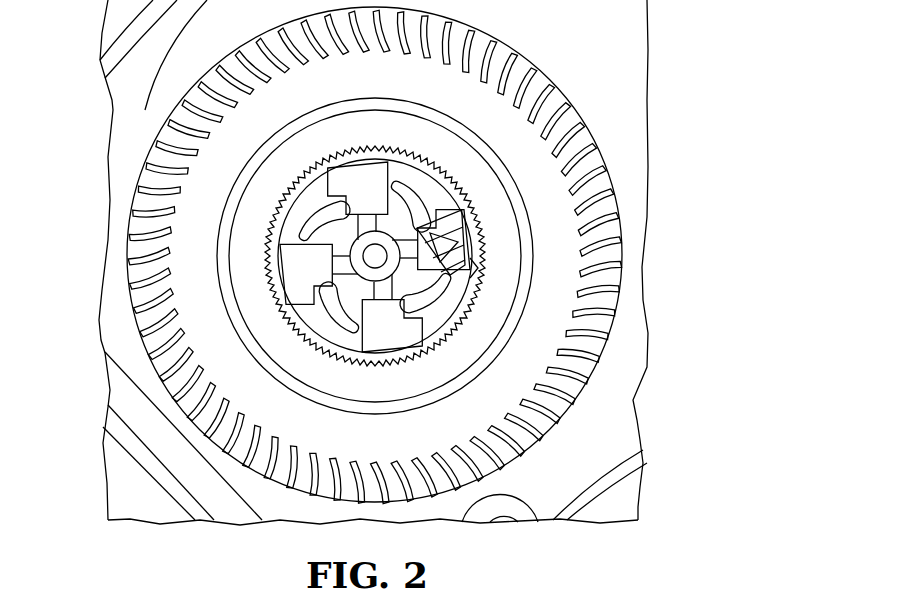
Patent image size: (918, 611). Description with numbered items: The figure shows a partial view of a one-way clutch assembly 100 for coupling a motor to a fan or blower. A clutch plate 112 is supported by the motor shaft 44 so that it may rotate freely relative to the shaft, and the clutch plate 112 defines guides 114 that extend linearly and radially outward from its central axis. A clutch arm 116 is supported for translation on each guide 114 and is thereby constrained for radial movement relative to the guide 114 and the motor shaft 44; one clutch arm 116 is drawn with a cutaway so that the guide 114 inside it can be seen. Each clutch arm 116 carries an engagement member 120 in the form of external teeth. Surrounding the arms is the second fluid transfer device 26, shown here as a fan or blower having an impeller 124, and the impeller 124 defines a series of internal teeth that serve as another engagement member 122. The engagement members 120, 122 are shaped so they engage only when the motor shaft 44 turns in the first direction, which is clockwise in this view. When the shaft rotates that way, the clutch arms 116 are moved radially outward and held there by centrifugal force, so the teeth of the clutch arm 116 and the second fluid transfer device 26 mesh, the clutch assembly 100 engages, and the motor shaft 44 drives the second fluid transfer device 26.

The second fluid transfer device 26 is at (566, 90).
The guides 114 is at (382, 255).
The one-way clutch assembly 100 is at (300, 340).
The clutch plate 112 is at (380, 281).
The motor shaft 44 is at (366, 254).
The engagement member 120 is at (400, 280).
The another engagement member 122 is at (440, 212).
The impeller 124 is at (466, 243).
The clutch arm 116 is at (471, 270).